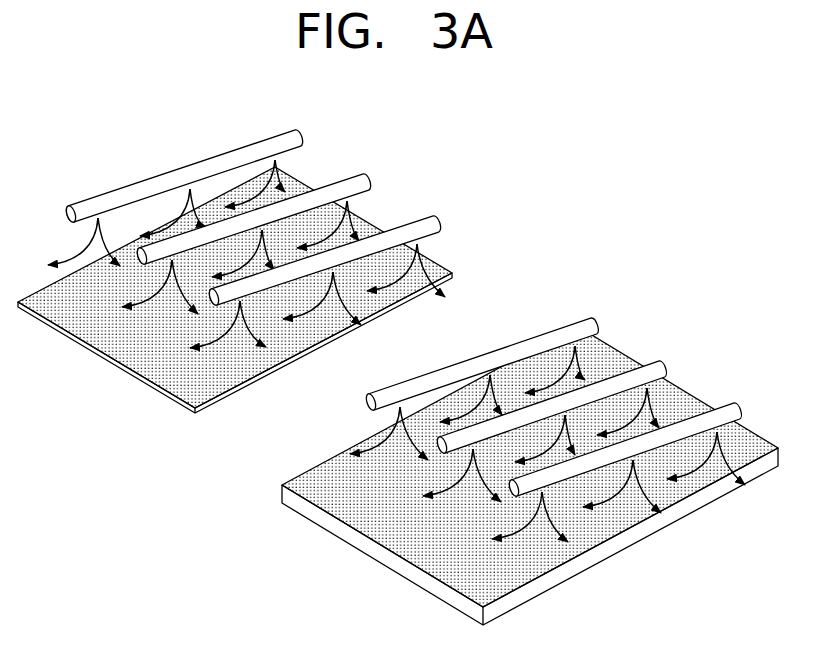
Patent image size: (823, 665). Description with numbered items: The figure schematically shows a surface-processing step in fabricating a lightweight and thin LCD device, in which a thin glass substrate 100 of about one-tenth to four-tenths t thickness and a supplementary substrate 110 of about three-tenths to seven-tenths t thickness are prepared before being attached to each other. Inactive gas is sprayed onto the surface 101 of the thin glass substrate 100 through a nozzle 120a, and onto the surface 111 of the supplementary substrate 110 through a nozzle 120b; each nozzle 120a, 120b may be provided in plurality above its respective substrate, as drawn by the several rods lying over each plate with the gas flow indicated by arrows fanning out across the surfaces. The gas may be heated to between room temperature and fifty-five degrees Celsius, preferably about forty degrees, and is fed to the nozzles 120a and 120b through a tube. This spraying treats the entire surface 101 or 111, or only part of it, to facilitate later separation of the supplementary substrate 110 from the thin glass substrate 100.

The thin glass substrate 100 is at (232, 290).
The surface of the thin glass substrate 101 is at (78, 331).
The supplementary substrate 110 is at (523, 475).
The surface of the supplementary substrate 111 is at (348, 518).
The nozzle 120a is at (366, 182).
The nozzle 120b is at (665, 367).